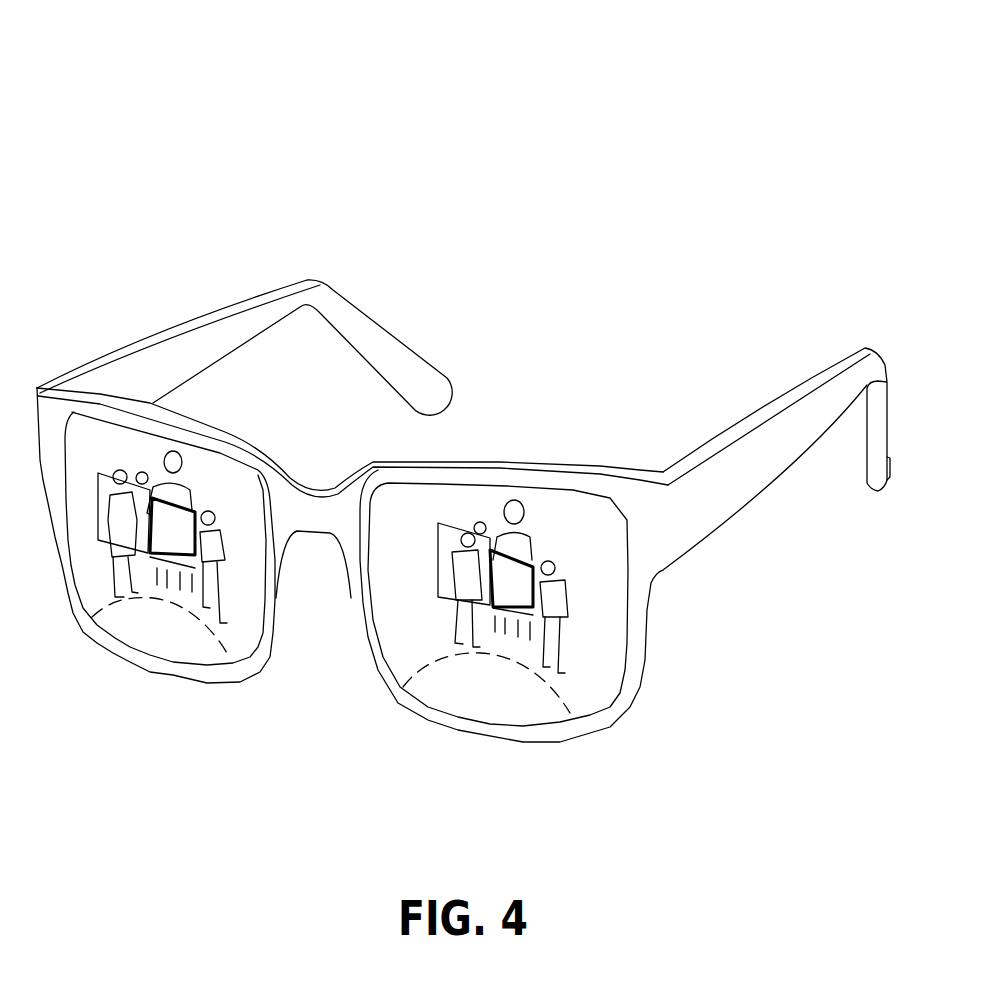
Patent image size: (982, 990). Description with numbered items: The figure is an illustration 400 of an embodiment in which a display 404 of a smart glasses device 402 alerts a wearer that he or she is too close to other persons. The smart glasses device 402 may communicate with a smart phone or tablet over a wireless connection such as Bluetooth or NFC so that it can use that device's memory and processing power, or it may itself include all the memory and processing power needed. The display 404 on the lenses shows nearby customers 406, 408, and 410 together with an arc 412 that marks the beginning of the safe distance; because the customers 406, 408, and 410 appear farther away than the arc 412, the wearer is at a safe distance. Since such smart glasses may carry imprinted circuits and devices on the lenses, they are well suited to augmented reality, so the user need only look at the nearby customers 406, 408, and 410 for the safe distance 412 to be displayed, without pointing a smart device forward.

The illustration 400 is at (463, 371).
The smart glasses device 402 is at (143, 335).
The display 404 is at (127, 427).
The nearby customer 406 is at (177, 463).
The nearby customer 408 is at (117, 500).
The nearby customer 410 is at (215, 504).
The arc 412 is at (143, 603).